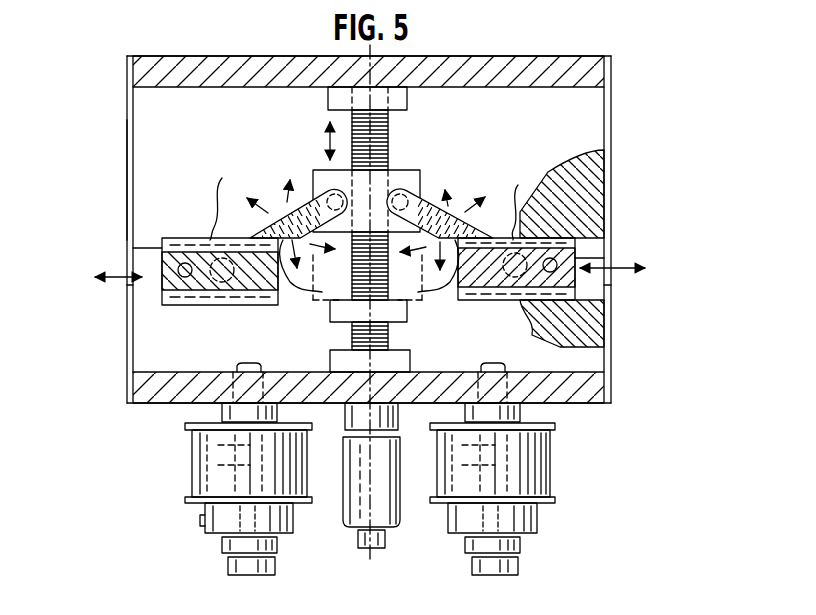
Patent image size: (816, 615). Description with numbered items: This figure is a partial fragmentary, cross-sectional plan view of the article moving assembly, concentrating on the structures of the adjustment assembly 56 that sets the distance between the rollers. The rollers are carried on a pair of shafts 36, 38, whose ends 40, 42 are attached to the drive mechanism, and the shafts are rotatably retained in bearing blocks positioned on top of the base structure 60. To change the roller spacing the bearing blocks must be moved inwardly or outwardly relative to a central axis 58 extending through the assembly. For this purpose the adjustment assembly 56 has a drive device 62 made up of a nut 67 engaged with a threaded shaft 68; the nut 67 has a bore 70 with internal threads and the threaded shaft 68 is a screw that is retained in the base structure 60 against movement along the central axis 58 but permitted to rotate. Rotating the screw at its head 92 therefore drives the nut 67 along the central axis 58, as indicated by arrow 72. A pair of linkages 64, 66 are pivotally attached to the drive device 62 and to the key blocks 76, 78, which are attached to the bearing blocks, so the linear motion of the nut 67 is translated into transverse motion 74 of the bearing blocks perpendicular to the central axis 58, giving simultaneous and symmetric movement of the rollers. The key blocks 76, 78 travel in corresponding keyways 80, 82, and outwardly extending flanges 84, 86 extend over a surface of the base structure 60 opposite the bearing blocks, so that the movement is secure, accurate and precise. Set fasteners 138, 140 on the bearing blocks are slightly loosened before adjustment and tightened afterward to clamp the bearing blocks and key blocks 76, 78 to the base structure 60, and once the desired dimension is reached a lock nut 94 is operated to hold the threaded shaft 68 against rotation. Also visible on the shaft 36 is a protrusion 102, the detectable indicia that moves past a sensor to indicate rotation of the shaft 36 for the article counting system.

The shaft 36 is at (200, 460).
The shaft 38 is at (552, 456).
The end of shaft 40 is at (196, 477).
The end of shaft 42 is at (552, 481).
The adjustment assembly 56 is at (126, 176).
The central axis 58 is at (375, 505).
The base structure 60 is at (145, 113).
The drive device 62 is at (462, 137).
The linkage 64 is at (290, 204).
The linkage 66 is at (455, 202).
The nut 67 is at (318, 172).
The threaded shaft 68 is at (392, 128).
The bore 70 is at (390, 152).
The arrow indicating movement of nut 72 is at (328, 130).
The directional arrow for transverse motion 74 is at (122, 270).
The key block 76 is at (160, 256).
The key block 78 is at (592, 254).
The keyway 80 is at (125, 291).
The keyway 82 is at (592, 286).
The outwardly extending flange 84 is at (206, 305).
The outwardly extending flange 86 is at (367, 222).
The head 92 is at (350, 510).
The lock nut 94 is at (347, 415).
The protrusion 102 is at (200, 524).
The set fastener 138 is at (186, 239).
The set fastener 140 is at (524, 222).